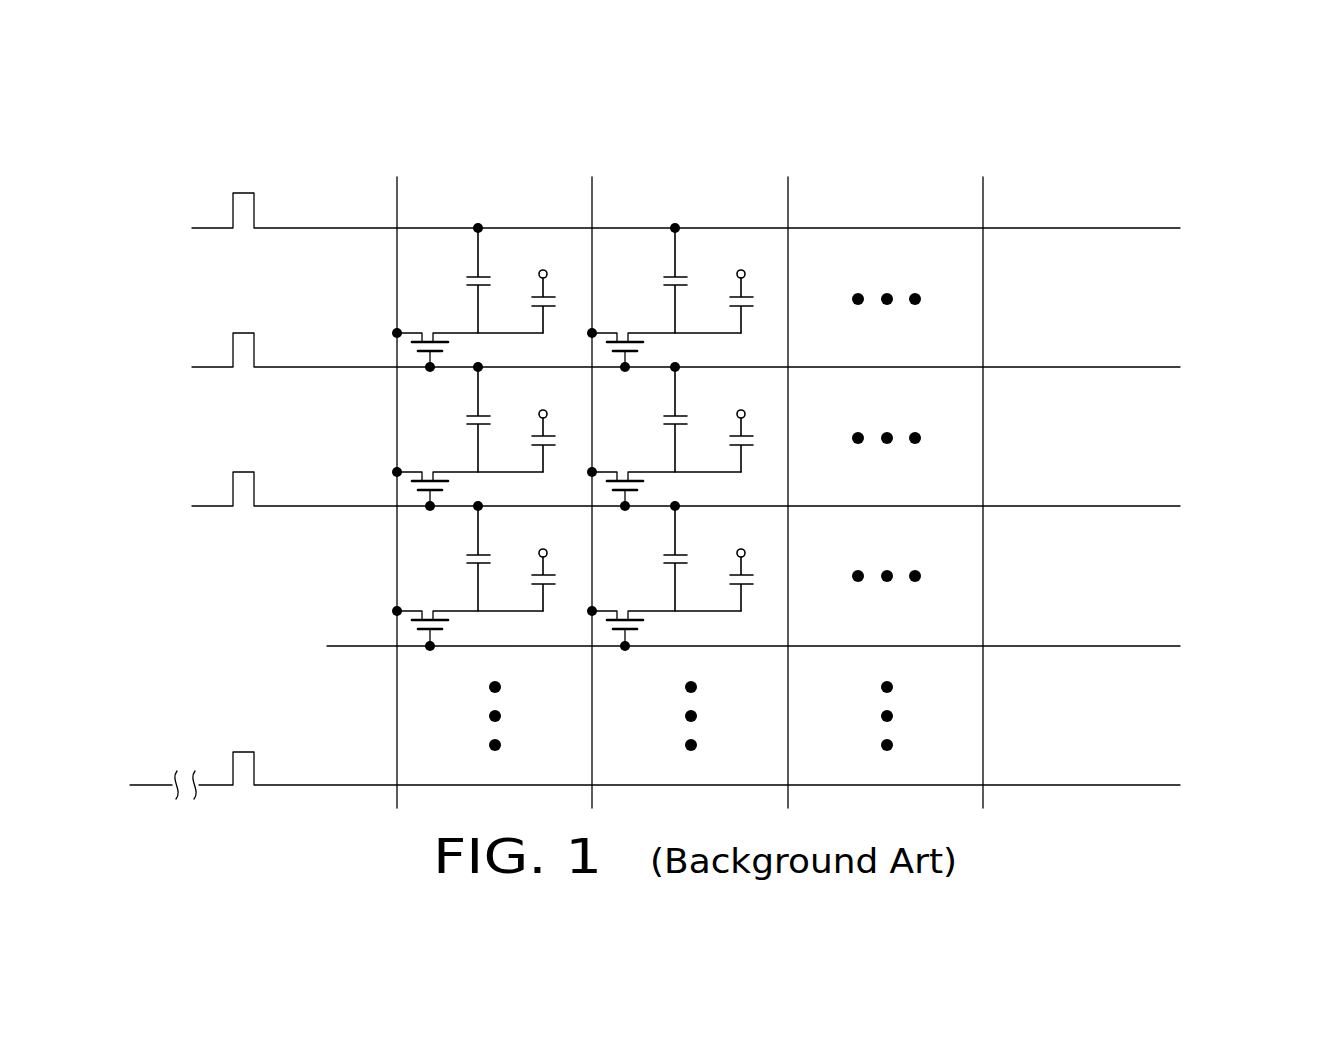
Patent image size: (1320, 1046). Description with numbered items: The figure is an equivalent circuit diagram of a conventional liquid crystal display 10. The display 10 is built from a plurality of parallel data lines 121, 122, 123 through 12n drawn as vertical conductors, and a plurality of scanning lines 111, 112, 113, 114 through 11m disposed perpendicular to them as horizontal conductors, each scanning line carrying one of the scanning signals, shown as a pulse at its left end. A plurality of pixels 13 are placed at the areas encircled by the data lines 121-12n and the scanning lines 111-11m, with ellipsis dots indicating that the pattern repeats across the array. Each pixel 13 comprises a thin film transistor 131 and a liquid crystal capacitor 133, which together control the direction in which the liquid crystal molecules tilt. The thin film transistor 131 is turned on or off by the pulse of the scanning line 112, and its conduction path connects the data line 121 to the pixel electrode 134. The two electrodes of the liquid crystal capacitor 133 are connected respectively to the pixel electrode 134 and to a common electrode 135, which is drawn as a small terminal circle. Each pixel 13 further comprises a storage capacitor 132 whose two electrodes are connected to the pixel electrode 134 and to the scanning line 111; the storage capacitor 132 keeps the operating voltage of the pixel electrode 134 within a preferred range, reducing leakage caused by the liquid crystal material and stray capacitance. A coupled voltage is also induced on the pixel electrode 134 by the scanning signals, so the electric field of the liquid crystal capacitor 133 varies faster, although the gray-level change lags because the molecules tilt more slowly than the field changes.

The liquid crystal display 10 is at (815, 73).
The scanning line 111 is at (1157, 228).
The scanning line 112 is at (1157, 367).
The scanning line 113 is at (1157, 506).
The scanning line 114 is at (1157, 646).
The scanning line 11m is at (1157, 785).
The data line 121 is at (398, 192).
The data line 122 is at (593, 192).
The data line 123 is at (789, 192).
The data line 12n is at (984, 192).
The pixel 13 is at (417, 264).
The thin film transistor 131 is at (427, 328).
The storage capacitor 132 is at (463, 278).
The liquid crystal capacitor 133 is at (528, 298).
The pixel electrode 134 is at (486, 348).
The common electrode 135 is at (640, 397).